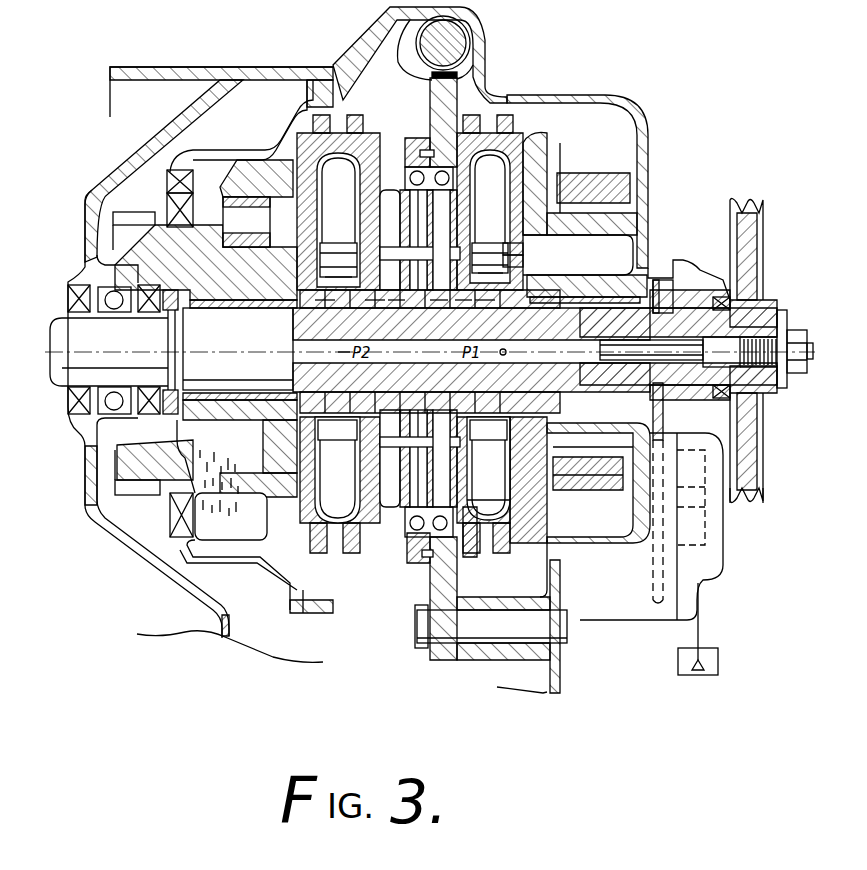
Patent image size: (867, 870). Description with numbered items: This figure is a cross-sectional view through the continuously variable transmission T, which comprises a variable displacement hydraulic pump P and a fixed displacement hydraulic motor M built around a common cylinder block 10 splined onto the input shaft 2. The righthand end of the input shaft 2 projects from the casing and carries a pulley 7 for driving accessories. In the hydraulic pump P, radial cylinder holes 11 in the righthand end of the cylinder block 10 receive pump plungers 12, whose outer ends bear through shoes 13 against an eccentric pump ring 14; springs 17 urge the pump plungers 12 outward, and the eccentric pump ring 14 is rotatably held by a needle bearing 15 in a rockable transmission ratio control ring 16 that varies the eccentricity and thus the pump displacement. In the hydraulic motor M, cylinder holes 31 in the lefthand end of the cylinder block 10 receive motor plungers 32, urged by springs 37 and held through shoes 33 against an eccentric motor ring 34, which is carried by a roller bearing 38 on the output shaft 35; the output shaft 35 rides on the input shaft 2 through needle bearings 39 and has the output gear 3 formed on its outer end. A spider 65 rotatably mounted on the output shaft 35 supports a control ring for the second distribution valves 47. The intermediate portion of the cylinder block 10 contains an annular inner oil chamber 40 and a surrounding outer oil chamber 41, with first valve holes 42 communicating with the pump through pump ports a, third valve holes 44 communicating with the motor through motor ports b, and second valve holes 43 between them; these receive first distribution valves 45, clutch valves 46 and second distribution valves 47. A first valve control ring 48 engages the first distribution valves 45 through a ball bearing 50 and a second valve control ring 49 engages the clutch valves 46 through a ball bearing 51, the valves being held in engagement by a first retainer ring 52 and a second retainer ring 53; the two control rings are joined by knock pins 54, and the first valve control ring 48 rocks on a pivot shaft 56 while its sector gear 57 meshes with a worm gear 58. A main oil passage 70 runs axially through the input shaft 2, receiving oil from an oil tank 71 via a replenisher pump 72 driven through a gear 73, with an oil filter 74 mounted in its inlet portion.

The input shaft 2 is at (55, 334).
The output gear 3 is at (135, 495).
The pulley 7 is at (763, 208).
The cylinder block 10 is at (527, 278).
The cylinder holes 11 is at (513, 248).
The pump plungers 12 is at (497, 483).
The shoes 13 is at (490, 533).
The eccentric pump ring 14 is at (523, 533).
The needle bearing 15 is at (607, 478).
The transmission ratio control ring 16 is at (575, 487).
The springs 17 is at (488, 243).
The cylinder holes 31 is at (337, 339).
The motor plungers 32 is at (347, 493).
The shoes 33 is at (358, 146).
The eccentric motor ring 34 is at (362, 557).
The output shaft 35 is at (206, 348).
The springs 37 is at (336, 272).
The roller bearing 38 is at (234, 223).
The needle bearings 39 is at (293, 333).
The inner oil chamber 40 is at (416, 300).
The outer oil chamber 41 is at (462, 300).
The first valve holes 42 is at (438, 300).
The second valve holes 43 is at (393, 300).
The third valve holes 44 is at (370, 305).
The first distribution valves 45 is at (442, 404).
The clutch valves 46 is at (430, 404).
The second distribution valves 47 is at (408, 400).
The first valve control ring 48 is at (432, 100).
The second valve control ring 49 is at (417, 138).
The ball bearing 50 is at (458, 537).
The ball bearing 51 is at (405, 537).
The first retainer ring 52 is at (433, 502).
The second retainer ring 53 is at (405, 522).
The knock pins 54 is at (422, 560).
The pivot shaft 56 is at (416, 630).
The sector gear 57 is at (457, 77).
The worm gear 58 is at (460, 43).
The spider 65 is at (282, 482).
The main oil passage 70 is at (545, 345).
The oil tank 71 is at (718, 662).
The replenisher pump 72 is at (705, 524).
The gear 73 is at (658, 280).
The oil filter 74 is at (652, 362).
The hydraulic motor M is at (345, 110).
The hydraulic pump P is at (497, 107).
The continuously variable transmission T is at (592, 84).
The pump ports a is at (485, 319).
The motor ports b is at (325, 319).